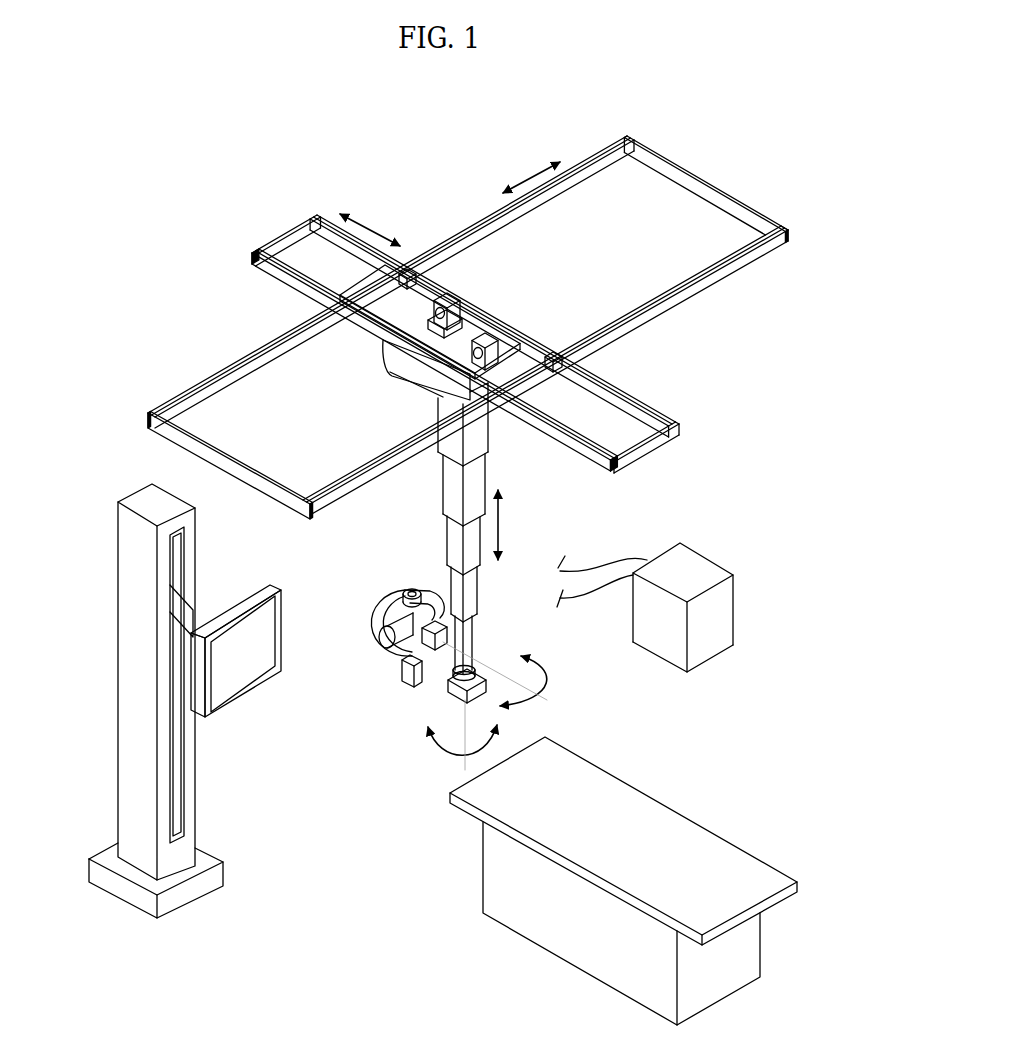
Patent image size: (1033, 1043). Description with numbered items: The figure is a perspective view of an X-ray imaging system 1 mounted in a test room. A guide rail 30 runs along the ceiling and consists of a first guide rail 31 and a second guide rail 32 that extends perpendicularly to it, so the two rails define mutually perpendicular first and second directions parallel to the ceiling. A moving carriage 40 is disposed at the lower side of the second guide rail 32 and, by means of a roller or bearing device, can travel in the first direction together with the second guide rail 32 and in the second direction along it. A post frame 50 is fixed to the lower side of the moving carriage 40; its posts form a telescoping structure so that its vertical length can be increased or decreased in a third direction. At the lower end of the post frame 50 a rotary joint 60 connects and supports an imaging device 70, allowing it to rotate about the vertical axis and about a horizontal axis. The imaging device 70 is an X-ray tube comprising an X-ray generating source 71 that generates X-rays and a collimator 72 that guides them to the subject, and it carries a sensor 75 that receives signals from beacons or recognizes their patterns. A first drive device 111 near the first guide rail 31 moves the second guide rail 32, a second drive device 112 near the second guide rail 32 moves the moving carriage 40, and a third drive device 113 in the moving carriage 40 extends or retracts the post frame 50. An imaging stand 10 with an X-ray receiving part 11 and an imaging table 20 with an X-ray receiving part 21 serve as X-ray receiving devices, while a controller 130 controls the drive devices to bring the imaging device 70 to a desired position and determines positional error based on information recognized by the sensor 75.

The X-ray imaging system 1 is at (440, 97).
The imaging stand 10 is at (110, 562).
The X-ray receiving part 11 is at (240, 678).
The imaging table 20 is at (660, 785).
The X-ray receiving part 21 is at (697, 830).
The guide rail 30 is at (687, 328).
The first guide rail 31 is at (632, 325).
The second guide rail 32 is at (632, 397).
The moving carriage 40 is at (400, 367).
The post frame 50 is at (450, 485).
The rotary joint 60 is at (443, 670).
The imaging device 70 is at (396, 583).
The X-ray generating source 71 is at (387, 640).
The collimator 72 is at (395, 657).
The sensor 75 is at (402, 680).
The first drive device 111 is at (407, 277).
The second drive device 112 is at (460, 293).
The third drive device 113 is at (487, 342).
The controller 130 is at (707, 567).